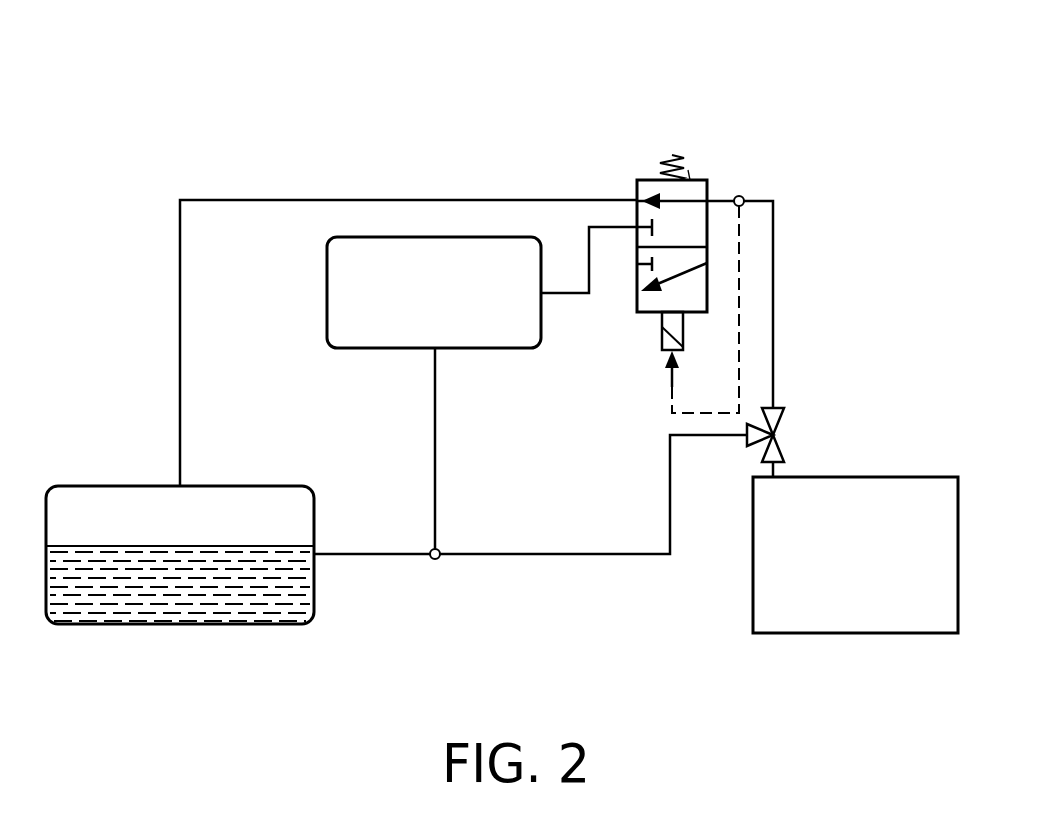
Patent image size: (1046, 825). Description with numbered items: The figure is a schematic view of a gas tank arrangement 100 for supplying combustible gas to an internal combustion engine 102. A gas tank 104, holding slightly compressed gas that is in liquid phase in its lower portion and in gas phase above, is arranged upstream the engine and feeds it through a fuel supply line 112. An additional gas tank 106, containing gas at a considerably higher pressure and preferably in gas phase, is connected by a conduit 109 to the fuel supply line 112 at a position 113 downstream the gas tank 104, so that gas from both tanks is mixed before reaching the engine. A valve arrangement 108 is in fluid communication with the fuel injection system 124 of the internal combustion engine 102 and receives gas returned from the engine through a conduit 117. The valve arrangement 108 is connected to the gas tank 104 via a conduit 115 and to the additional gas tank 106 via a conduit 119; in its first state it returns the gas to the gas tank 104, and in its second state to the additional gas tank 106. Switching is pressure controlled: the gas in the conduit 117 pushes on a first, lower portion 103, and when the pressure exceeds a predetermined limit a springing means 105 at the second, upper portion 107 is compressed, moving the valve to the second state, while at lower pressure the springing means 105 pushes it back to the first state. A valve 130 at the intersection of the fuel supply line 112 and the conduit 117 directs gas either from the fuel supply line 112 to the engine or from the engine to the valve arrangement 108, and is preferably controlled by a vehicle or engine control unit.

The gas tank arrangement 100 is at (168, 93).
The internal combustion engine 102 is at (852, 634).
The first, lower portion 103 is at (684, 346).
The gas tank 104 is at (178, 626).
The springing means 105 is at (672, 157).
The additional gas tank 106 is at (438, 237).
The second, upper portion 107 is at (689, 179).
The valve arrangement 108 is at (701, 179).
The conduit 109 is at (435, 448).
The fuel supply line 112 is at (366, 556).
The position 113 is at (432, 556).
The conduit 115 is at (325, 200).
The conduit 117 is at (774, 248).
The conduit 119 is at (557, 292).
The fuel injection system 124 is at (778, 474).
The valve 130 is at (782, 418).